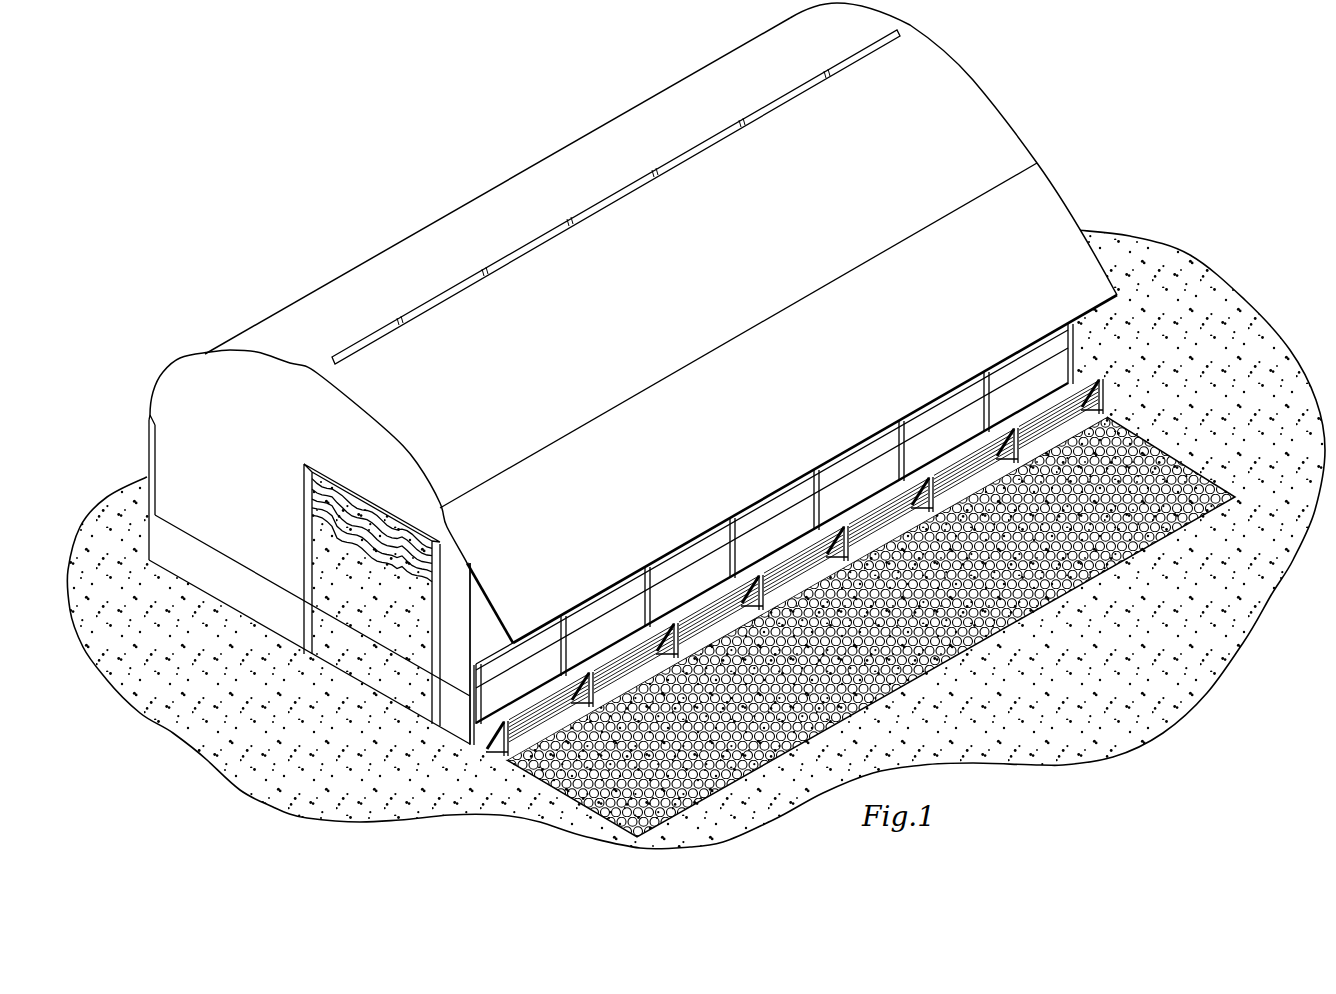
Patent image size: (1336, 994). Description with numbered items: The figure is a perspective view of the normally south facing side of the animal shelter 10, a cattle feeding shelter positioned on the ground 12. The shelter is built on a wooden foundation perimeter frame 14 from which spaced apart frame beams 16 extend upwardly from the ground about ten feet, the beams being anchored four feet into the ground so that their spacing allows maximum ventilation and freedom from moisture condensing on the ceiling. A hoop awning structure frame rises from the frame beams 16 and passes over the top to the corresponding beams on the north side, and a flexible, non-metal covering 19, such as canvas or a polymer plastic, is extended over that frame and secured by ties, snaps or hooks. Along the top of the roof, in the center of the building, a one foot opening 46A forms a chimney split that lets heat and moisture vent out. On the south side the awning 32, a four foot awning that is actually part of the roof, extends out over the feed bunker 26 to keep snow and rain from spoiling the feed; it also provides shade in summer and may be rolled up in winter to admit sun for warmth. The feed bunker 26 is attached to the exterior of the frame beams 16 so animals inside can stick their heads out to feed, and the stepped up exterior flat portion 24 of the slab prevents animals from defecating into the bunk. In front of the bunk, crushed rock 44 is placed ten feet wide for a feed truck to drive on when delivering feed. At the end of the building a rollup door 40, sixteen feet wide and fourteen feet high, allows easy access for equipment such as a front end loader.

The animal shelter 10 is at (652, 383).
The ground 12 is at (1263, 308).
The wooden foundation perimeter frame 14 is at (472, 747).
The frame beams 16 is at (1067, 352).
The covering 19 is at (975, 89).
The stepped up exterior flat portion 24 is at (1101, 404).
The feed bunker 26 is at (1103, 378).
The awning 32 is at (1040, 197).
The rollup door 40 is at (382, 550).
The crushed rock 44 is at (1165, 452).
The opening 46A is at (907, 26).